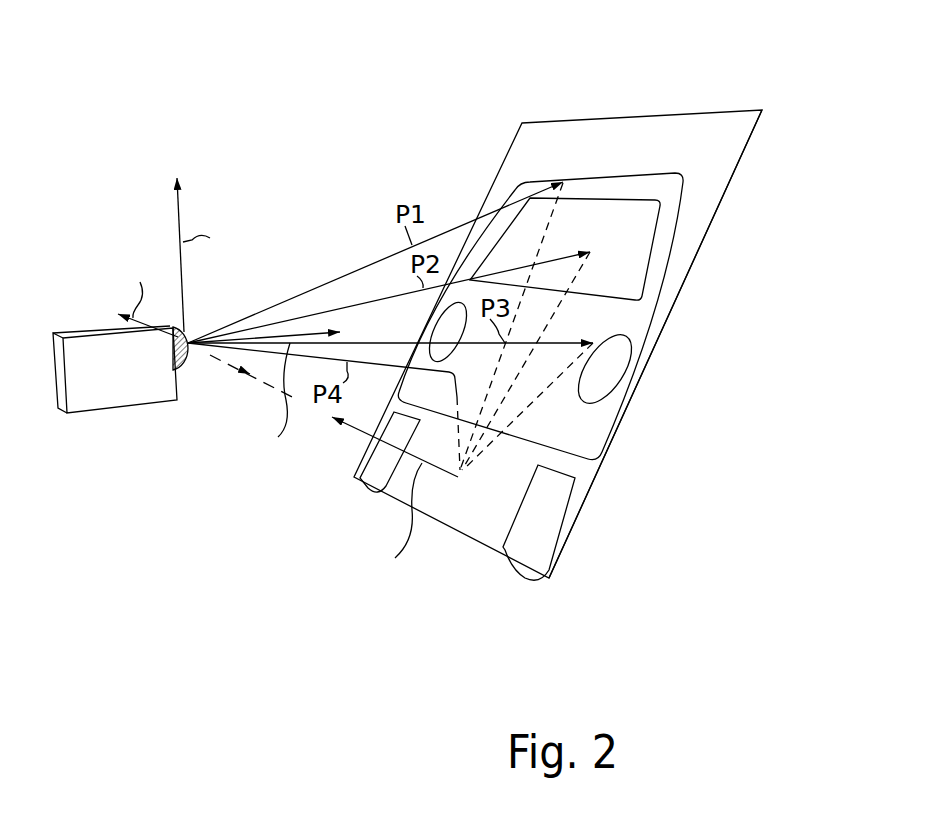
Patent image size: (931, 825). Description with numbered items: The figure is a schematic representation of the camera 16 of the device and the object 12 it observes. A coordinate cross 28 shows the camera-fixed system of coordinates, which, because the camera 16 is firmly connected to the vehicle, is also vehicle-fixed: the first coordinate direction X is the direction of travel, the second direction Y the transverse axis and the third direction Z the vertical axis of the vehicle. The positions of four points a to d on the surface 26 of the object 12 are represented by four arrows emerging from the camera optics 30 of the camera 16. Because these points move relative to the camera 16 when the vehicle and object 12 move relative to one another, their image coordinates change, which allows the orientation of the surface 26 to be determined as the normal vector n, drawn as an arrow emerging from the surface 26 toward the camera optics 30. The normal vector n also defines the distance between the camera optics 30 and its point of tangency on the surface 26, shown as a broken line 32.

The object 12 is at (755, 97).
The camera 16 is at (98, 415).
The surface 26 is at (698, 250).
The coordinate cross 28 is at (207, 188).
The camera optics 30 is at (188, 363).
The broken line 32 is at (327, 413).